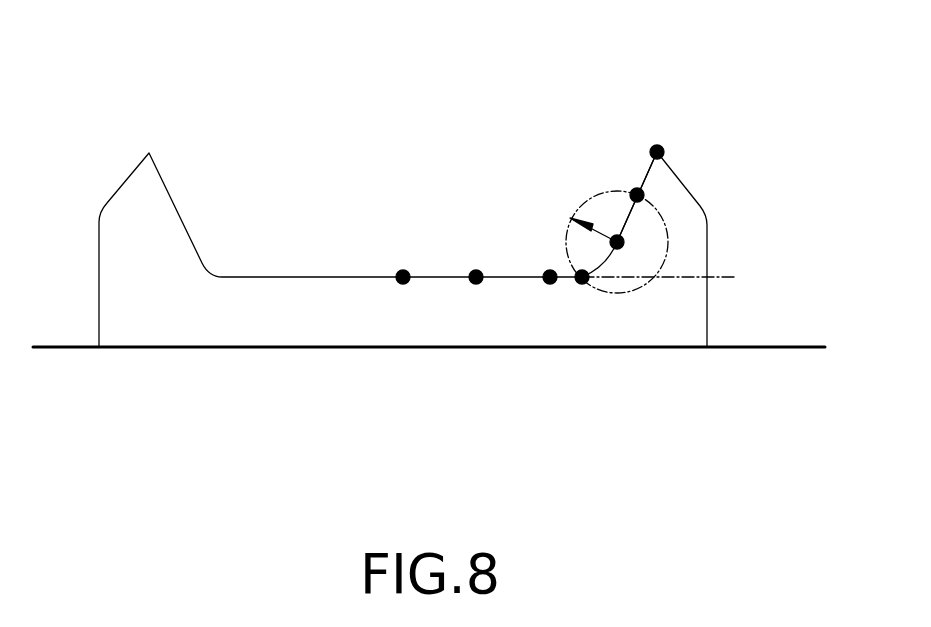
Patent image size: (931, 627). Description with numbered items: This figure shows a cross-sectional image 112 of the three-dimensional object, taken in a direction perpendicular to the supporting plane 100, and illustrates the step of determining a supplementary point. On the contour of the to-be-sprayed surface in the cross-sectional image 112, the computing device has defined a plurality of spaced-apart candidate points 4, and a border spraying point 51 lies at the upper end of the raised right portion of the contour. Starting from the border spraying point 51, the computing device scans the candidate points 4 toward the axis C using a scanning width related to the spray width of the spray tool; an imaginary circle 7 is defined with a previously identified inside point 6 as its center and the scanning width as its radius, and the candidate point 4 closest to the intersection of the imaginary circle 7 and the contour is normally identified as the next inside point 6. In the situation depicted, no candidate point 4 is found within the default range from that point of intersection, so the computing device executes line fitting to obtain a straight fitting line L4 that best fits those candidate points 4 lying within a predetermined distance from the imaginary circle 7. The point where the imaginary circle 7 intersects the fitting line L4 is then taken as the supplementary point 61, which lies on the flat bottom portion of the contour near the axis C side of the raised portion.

The cross-sectional image 112 is at (210, 140).
The supporting plane 100 is at (757, 348).
The axis C is at (403, 277).
The candidate points 4 is at (476, 277).
The imaginary circle 7 is at (595, 192).
The inside point 6 is at (637, 195).
The border spraying point 51 is at (657, 152).
The supplementary point 61 is at (582, 277).
The fitting line L4 is at (684, 279).